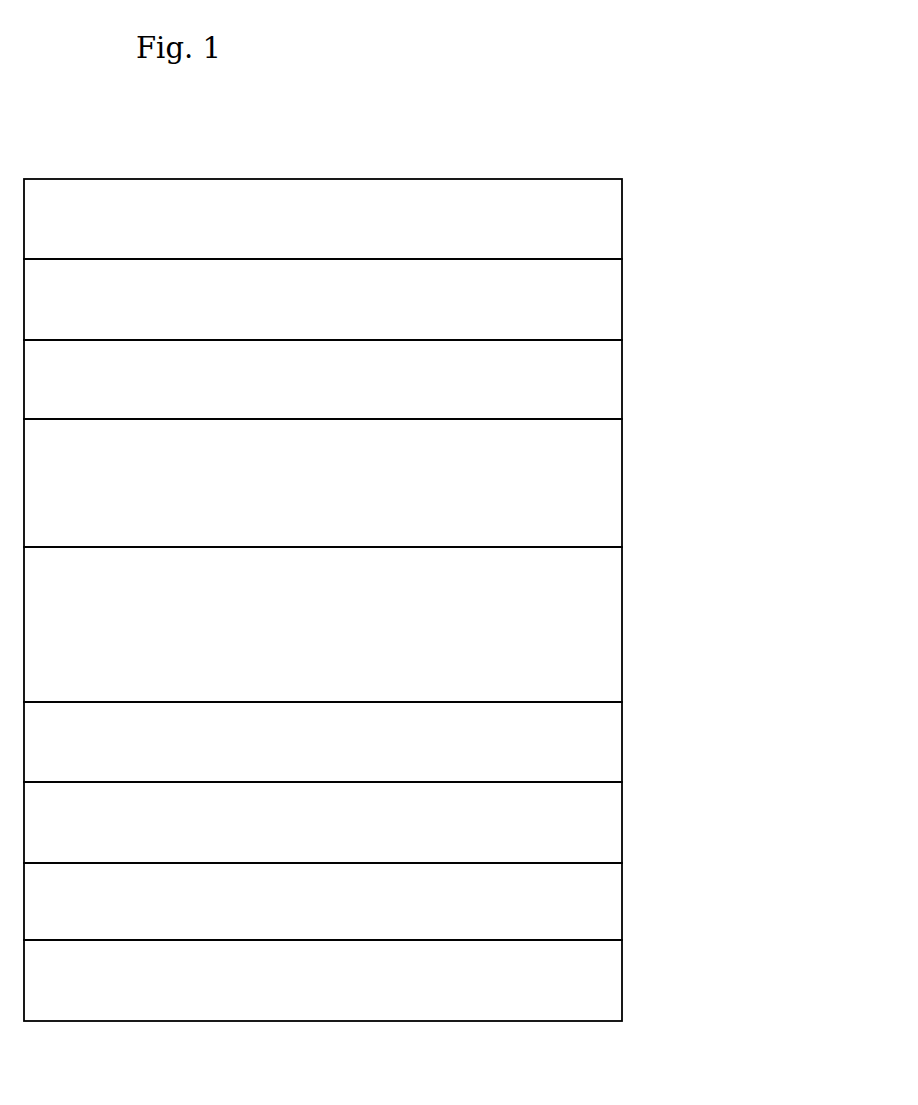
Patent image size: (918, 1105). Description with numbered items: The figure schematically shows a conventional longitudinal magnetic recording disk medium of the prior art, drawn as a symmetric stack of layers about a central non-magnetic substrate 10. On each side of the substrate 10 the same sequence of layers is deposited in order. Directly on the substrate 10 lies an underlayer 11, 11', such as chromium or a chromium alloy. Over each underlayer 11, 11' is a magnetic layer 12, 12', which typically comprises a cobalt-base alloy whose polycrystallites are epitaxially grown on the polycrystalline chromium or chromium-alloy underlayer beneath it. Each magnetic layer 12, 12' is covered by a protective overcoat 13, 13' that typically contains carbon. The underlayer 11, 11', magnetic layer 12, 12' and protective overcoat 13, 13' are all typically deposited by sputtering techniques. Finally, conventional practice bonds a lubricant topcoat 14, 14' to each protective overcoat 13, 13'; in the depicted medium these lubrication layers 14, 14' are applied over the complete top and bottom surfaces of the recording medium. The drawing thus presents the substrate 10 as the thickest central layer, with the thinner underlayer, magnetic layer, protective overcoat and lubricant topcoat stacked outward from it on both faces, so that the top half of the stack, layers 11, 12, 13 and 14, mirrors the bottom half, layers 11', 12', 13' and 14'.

The non-magnetic substrate 10 is at (743, 651).
The underlayer 11 is at (423, 483).
The magnetic layer 12 is at (423, 379).
The protective overcoat 13 is at (423, 299).
The lubricant topcoat 14 is at (423, 219).
The underlayer 11' is at (427, 742).
The magnetic layer 12' is at (427, 822).
The protective overcoat 13' is at (427, 901).
The lubricant topcoat 14' is at (427, 980).